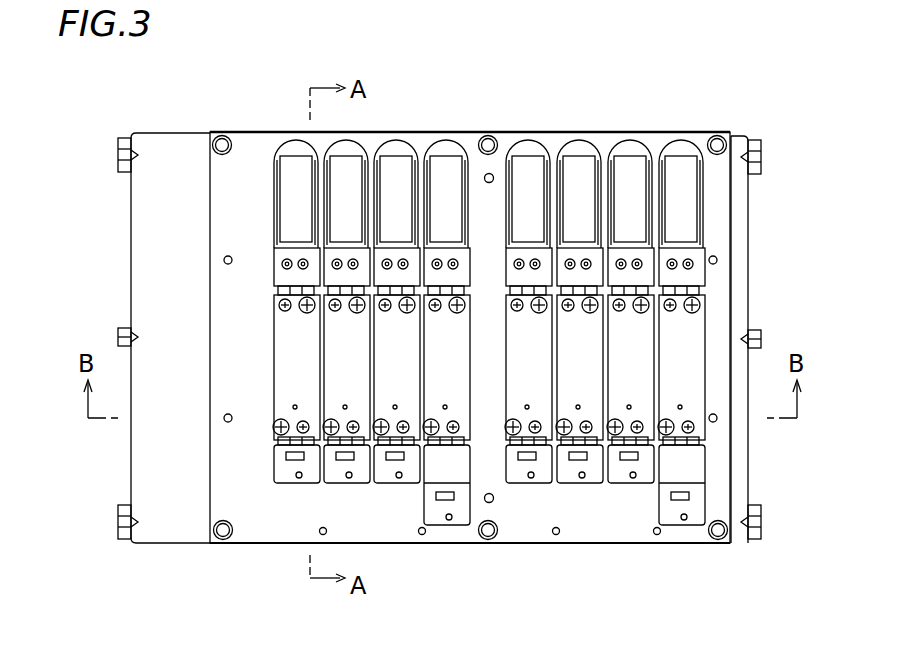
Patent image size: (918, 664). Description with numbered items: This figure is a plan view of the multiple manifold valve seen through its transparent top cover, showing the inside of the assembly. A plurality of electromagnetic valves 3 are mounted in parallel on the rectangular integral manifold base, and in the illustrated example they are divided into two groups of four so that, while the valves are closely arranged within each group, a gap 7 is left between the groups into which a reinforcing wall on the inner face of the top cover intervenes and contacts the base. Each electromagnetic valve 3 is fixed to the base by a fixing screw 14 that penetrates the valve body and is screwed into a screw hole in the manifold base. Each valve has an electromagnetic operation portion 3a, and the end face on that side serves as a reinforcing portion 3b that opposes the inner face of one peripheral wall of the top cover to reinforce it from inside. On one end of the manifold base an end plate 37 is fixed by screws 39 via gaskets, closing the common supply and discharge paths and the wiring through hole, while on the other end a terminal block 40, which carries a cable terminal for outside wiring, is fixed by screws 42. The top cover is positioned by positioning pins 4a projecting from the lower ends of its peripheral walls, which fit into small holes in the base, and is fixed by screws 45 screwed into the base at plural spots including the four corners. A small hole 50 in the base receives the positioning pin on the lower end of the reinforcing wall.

The electromagnetic valve 3 is at (546, 281).
The electromagnetic operation portion 3a is at (395, 185).
The reinforcing portion 3b is at (677, 185).
The positioning pin 4a is at (224, 260).
The gap 7 is at (490, 385).
The fixing screw 14 is at (318, 307).
The end plate 37 is at (740, 210).
The screw 39 is at (762, 537).
The terminal block 40 is at (146, 215).
The screw 42 is at (120, 140).
The screw 45 is at (222, 138).
The small hole 50 is at (490, 174).